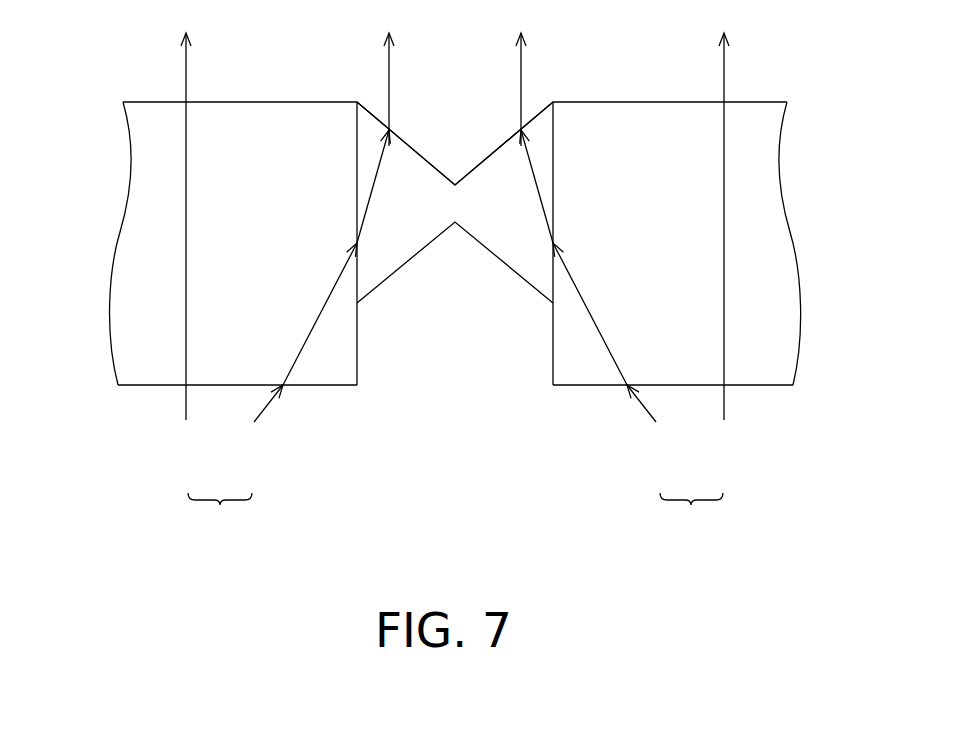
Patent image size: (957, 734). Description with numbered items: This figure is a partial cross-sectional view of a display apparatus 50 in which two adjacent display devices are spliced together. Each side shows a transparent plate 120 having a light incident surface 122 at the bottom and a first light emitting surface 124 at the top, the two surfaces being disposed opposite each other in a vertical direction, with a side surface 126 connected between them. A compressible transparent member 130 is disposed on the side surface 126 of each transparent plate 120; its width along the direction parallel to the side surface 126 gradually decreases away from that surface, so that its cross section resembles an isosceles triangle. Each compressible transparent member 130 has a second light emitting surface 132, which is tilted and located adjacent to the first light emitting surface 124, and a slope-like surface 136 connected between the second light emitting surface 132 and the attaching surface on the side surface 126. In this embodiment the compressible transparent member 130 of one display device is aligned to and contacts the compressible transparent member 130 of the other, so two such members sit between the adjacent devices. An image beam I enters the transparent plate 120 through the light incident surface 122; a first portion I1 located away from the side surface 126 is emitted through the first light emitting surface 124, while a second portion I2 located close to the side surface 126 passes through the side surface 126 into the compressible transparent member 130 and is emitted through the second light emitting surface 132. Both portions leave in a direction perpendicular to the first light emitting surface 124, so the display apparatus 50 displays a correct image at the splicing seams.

The display apparatus 50 is at (835, 571).
The transparent plate 120 is at (140, 248).
The light incident surface 122 is at (148, 387).
The first light emitting surface 124 is at (147, 100).
The side surface 126 is at (356, 168).
The compressible transparent member 130 is at (400, 187).
The second light emitting surface 132 is at (436, 167).
The surface 136 is at (406, 262).
The first portion of the image beam I1 is at (187, 408).
The second portion of the image beam I2 is at (254, 422).
The image beam I is at (455, 517).